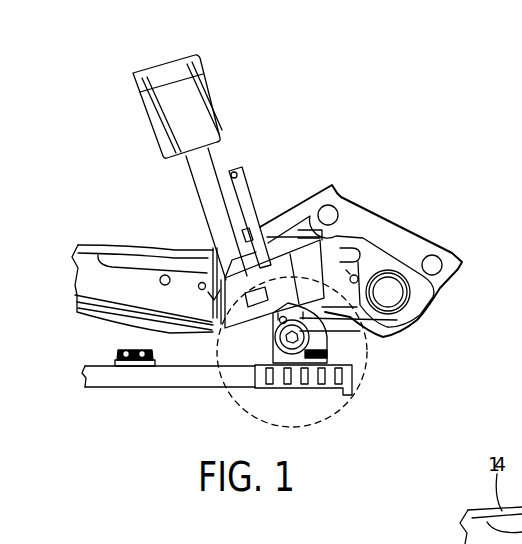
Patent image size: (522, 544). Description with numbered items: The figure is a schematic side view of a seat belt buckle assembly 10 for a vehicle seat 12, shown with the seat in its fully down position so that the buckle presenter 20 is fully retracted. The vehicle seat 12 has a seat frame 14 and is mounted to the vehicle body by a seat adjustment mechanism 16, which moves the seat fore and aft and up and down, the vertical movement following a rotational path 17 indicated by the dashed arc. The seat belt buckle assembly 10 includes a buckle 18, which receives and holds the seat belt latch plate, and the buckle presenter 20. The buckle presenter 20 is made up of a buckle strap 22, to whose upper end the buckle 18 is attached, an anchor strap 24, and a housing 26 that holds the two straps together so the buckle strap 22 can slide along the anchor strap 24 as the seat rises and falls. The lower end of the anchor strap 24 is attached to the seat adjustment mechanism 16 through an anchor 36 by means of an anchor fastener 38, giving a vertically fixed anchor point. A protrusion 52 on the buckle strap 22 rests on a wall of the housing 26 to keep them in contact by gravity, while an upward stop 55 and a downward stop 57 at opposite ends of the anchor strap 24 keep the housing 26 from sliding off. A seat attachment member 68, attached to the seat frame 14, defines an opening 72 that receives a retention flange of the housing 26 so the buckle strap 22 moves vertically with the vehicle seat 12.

The seat belt buckle assembly 10 is at (233, 56).
The vehicle seat 12 is at (431, 211).
The seat frame 14 is at (120, 248).
The seat adjustment mechanism 16 is at (107, 383).
The rotational path 17 is at (342, 405).
The buckle 18 is at (167, 72).
The buckle presenter 20 is at (261, 114).
The buckle strap 22 is at (195, 181).
The anchor strap 24 is at (250, 205).
The housing 26 is at (242, 328).
The anchor 36 is at (341, 343).
The anchor fastener 38 is at (306, 352).
The protrusion 52 is at (216, 262).
The upward stop 55 is at (237, 170).
The downward stop 57 is at (275, 325).
The seat attachment member 68 is at (212, 305).
The opening 72 is at (340, 233).